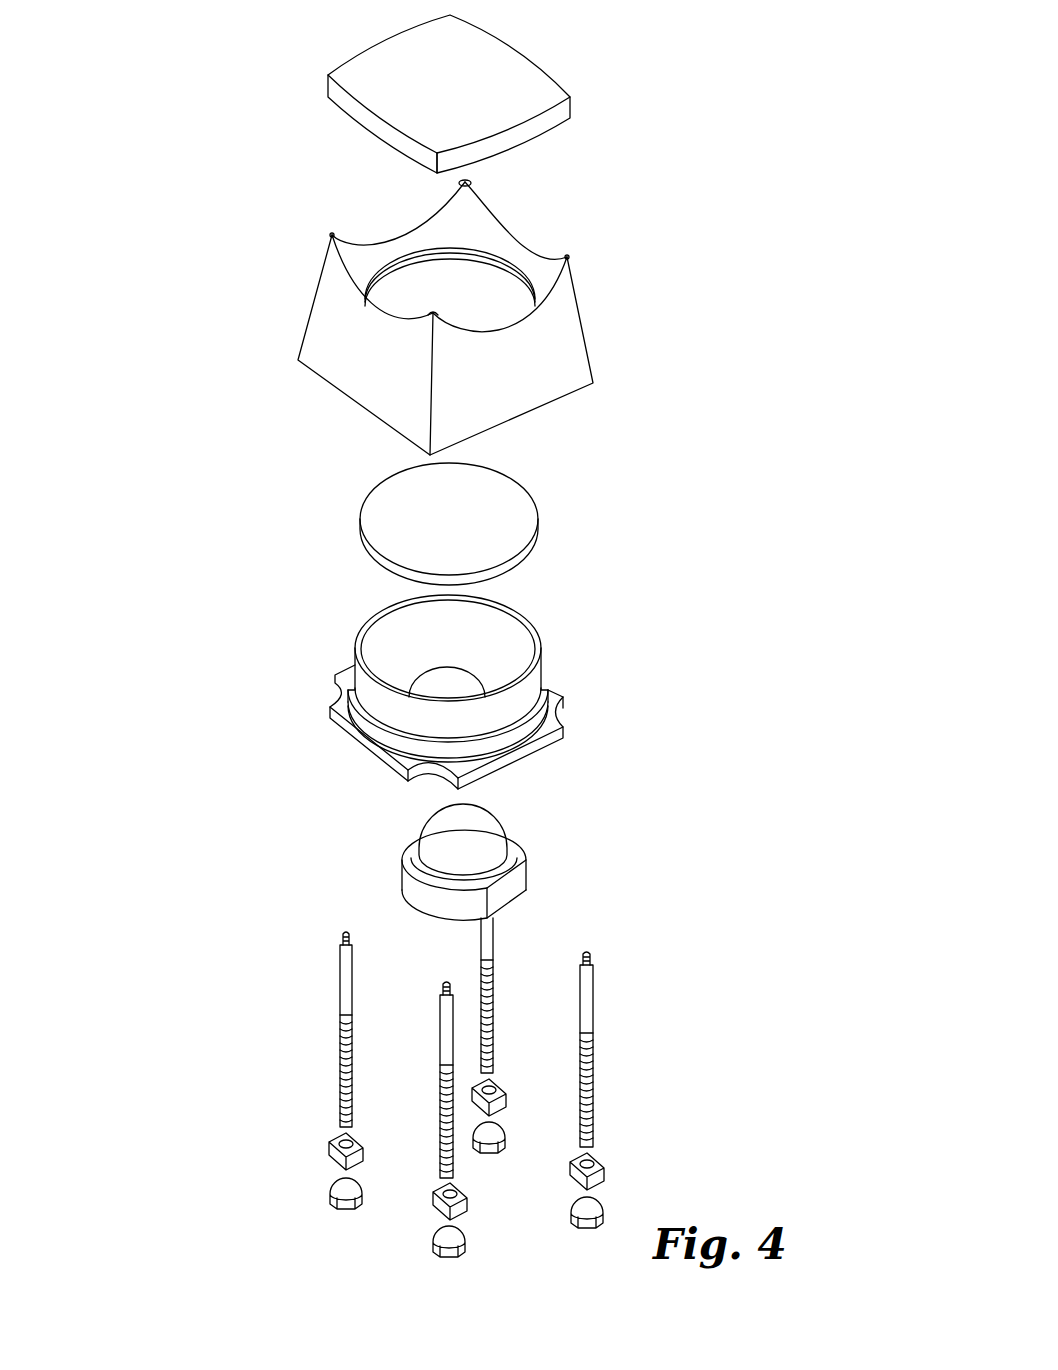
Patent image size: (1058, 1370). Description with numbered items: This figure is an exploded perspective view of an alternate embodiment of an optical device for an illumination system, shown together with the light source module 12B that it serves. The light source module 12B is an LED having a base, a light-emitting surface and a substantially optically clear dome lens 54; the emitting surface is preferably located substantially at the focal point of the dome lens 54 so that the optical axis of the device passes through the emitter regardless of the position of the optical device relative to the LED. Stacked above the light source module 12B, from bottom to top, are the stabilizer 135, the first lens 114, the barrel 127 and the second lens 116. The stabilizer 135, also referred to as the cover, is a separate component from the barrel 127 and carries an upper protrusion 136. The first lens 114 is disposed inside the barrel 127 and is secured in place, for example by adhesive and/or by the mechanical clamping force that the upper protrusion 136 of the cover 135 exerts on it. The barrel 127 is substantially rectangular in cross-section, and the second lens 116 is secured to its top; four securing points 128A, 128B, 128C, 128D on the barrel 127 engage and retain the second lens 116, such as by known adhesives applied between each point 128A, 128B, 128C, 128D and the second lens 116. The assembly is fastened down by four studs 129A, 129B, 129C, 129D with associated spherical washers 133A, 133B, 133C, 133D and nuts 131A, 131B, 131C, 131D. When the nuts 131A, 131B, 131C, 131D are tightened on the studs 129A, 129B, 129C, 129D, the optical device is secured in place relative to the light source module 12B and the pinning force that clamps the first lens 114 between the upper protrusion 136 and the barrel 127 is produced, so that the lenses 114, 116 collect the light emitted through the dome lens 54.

The second lens 116 is at (520, 63).
The barrel 127 is at (323, 320).
The securing point 128A is at (430, 320).
The securing point 128B is at (331, 237).
The securing point 128C is at (471, 187).
The securing point 128D is at (568, 258).
The first lens 114 is at (513, 503).
The upper protrusion 136 is at (540, 630).
The stabilizer 135 is at (328, 705).
The dome lens 54 is at (487, 818).
The light source module 12B is at (511, 851).
The stud 129A is at (442, 1052).
The stud 129B is at (342, 1005).
The stud 129C is at (494, 1008).
The stud 129D is at (591, 1017).
The spherical washer 133A is at (435, 1202).
The spherical washer 133B is at (330, 1147).
The spherical washer 133C is at (501, 1083).
The spherical washer 133D is at (599, 1157).
The nut 131A is at (433, 1235).
The nut 131B is at (330, 1188).
The nut 131C is at (502, 1150).
The nut 131D is at (599, 1205).